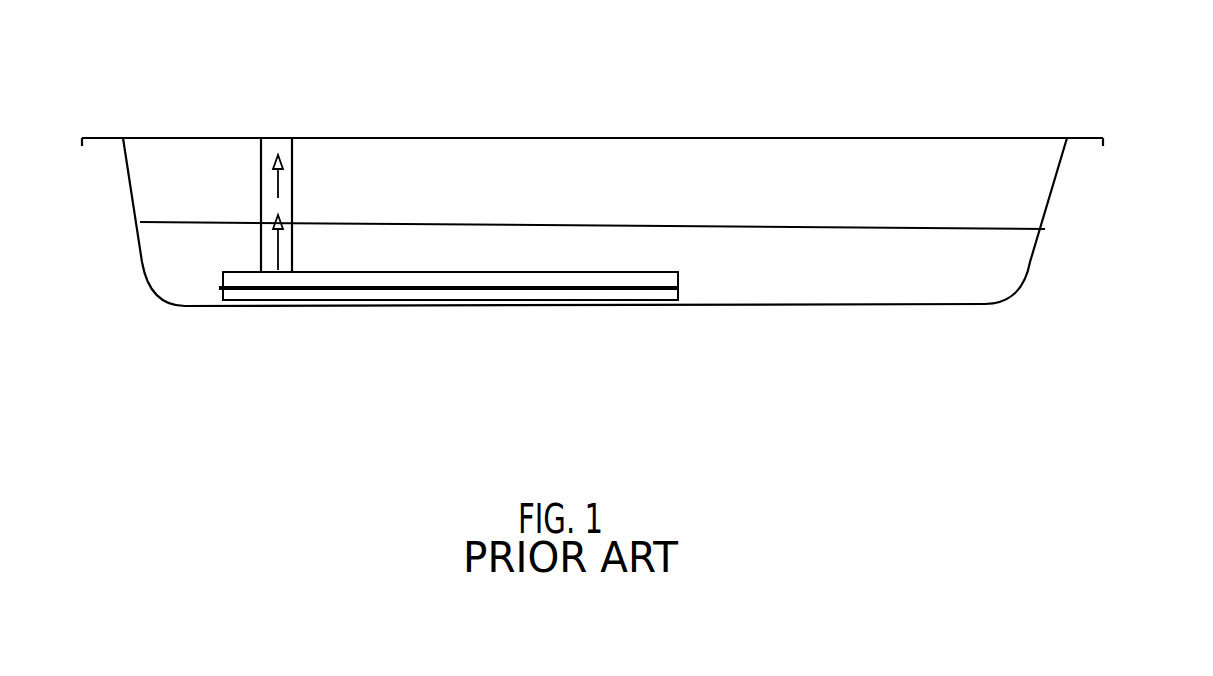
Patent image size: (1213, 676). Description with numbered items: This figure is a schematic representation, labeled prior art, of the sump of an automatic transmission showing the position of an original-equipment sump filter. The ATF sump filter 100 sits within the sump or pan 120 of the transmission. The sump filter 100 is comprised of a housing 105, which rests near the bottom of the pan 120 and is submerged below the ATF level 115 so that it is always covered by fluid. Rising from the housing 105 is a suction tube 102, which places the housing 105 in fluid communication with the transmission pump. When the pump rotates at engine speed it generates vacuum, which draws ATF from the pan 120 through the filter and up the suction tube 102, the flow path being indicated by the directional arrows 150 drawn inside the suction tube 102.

The ATF sump filter 100 is at (387, 322).
The suction tube 102 is at (280, 145).
The housing 105 is at (552, 297).
The ATF level 115 is at (780, 228).
The sump or pan 120 is at (1052, 202).
The directional arrows 150 is at (280, 222).